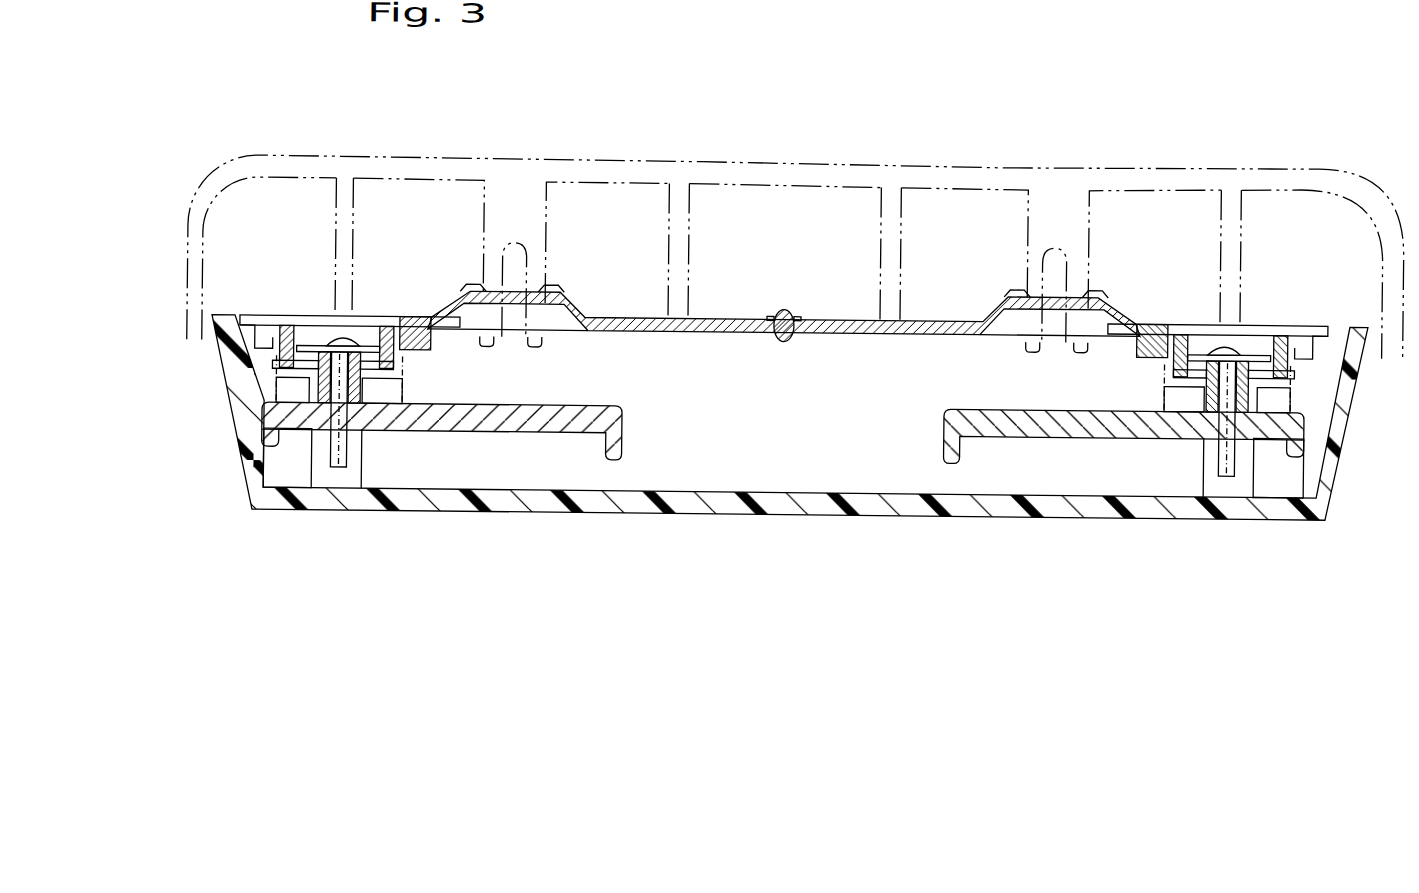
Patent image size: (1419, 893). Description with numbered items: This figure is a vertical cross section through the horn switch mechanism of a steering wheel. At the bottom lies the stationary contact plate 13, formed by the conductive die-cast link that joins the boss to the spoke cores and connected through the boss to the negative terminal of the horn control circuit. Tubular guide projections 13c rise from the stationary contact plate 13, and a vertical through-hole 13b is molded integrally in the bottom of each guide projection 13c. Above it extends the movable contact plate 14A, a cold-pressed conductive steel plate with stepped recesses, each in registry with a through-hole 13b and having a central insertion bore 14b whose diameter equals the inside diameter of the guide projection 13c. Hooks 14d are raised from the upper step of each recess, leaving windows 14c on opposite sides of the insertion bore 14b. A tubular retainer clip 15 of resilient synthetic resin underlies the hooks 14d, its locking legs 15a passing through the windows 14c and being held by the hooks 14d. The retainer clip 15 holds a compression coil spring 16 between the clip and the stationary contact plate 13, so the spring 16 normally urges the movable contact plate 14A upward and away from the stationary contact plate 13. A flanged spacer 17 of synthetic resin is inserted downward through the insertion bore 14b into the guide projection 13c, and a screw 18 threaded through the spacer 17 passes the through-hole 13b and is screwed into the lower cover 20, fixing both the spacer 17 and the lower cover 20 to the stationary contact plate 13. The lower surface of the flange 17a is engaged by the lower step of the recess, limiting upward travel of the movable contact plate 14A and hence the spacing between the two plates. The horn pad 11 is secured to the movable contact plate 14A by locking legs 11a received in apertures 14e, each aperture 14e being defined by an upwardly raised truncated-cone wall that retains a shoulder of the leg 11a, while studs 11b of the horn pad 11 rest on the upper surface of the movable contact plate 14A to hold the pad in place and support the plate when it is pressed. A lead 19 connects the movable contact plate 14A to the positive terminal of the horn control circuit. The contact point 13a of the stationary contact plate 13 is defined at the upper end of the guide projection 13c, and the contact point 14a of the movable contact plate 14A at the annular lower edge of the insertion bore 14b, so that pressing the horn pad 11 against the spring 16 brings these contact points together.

The horn pad 11 is at (780, 169).
The locking legs 11a is at (511, 196).
The studs 11b is at (342, 165).
The stationary contact plate 13 is at (623, 409).
The contact point 13a is at (386, 380).
The through-hole 13b is at (318, 468).
The guide projection 13c is at (262, 396).
The movable contact plate 14A is at (723, 315).
The contact point 14a is at (386, 374).
The insertion bore 14b is at (323, 313).
The windows 14c is at (273, 311).
The locking projections or hooks 14d is at (291, 313).
The apertures 14e is at (572, 286).
The tubular retainer clip 15 is at (276, 374).
The locking legs 15a is at (276, 311).
The compression coil spring 16 is at (413, 402).
The flanged spacer 17 is at (310, 435).
The flange 17a is at (366, 313).
The screw 18 is at (344, 332).
The lead 19 is at (798, 314).
The lower cover 20 is at (792, 514).